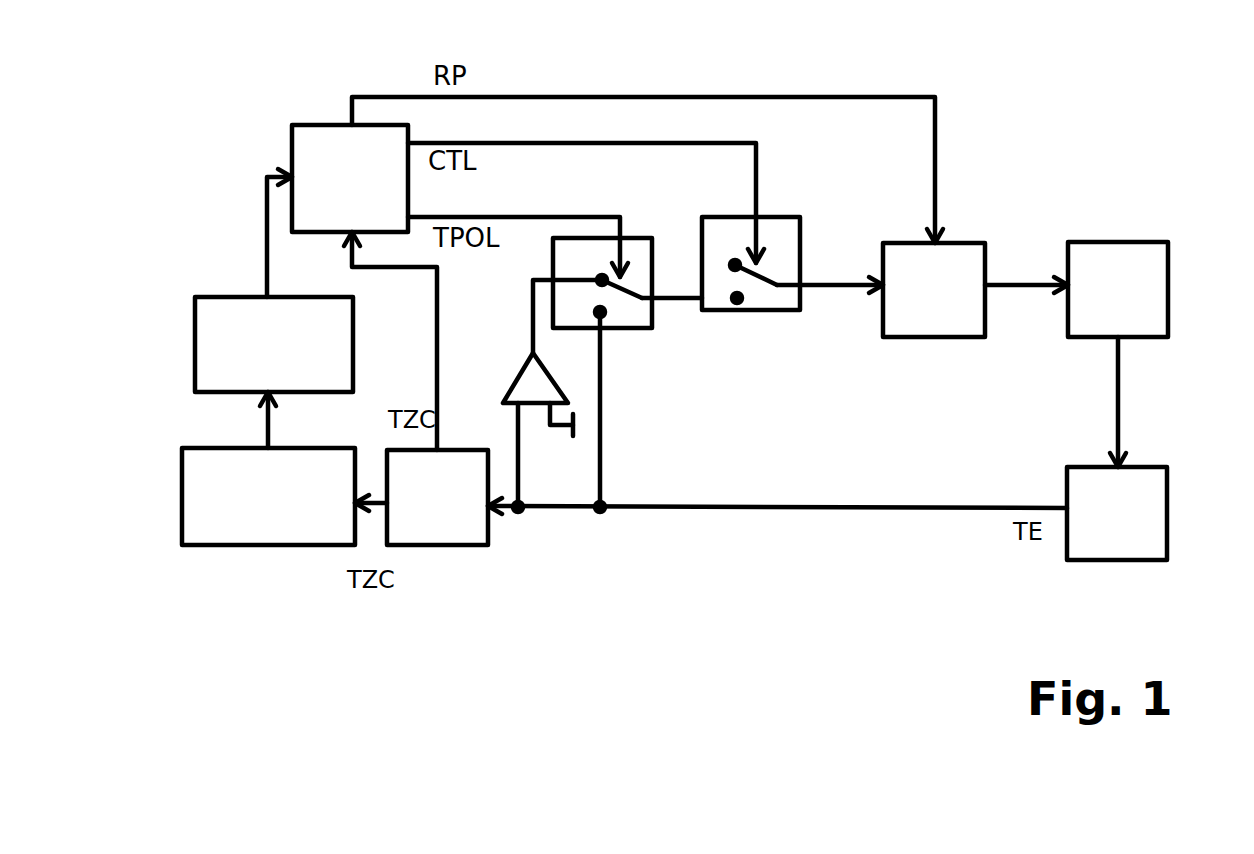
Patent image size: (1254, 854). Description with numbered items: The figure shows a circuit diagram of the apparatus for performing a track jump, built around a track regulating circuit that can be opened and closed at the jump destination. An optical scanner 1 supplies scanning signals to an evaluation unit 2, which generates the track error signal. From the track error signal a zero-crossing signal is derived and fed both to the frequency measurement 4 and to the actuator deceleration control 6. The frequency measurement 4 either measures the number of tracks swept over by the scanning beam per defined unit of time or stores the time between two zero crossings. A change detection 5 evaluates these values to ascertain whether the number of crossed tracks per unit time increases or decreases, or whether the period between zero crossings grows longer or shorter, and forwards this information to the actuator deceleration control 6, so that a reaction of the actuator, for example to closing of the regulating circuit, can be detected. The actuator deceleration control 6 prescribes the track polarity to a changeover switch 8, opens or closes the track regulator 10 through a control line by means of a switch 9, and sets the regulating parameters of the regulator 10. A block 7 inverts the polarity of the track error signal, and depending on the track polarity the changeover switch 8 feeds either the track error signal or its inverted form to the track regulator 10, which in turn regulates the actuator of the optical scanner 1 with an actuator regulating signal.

The optical scanner 1 is at (1152, 272).
The evaluation unit 2 is at (1145, 528).
The TZC frequency measurement 4 is at (242, 510).
The change detection 5 is at (233, 336).
The actuator deceleration control 6 is at (310, 157).
The block 7 is at (522, 365).
The changeover switch 8 is at (622, 310).
The switch 9 is at (757, 299).
The track regulator 10 is at (934, 290).